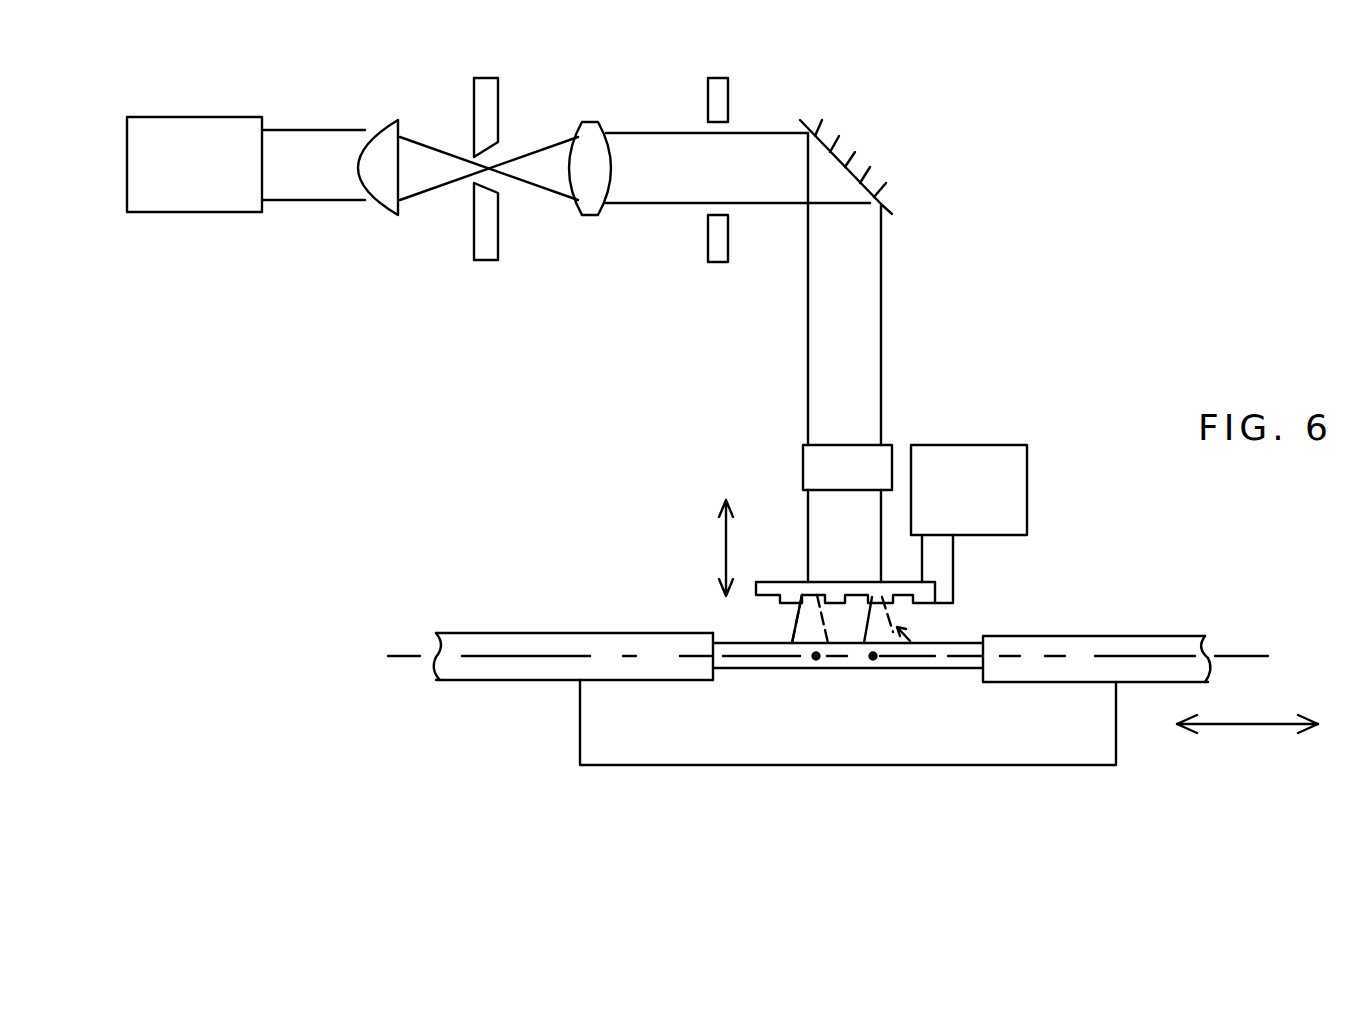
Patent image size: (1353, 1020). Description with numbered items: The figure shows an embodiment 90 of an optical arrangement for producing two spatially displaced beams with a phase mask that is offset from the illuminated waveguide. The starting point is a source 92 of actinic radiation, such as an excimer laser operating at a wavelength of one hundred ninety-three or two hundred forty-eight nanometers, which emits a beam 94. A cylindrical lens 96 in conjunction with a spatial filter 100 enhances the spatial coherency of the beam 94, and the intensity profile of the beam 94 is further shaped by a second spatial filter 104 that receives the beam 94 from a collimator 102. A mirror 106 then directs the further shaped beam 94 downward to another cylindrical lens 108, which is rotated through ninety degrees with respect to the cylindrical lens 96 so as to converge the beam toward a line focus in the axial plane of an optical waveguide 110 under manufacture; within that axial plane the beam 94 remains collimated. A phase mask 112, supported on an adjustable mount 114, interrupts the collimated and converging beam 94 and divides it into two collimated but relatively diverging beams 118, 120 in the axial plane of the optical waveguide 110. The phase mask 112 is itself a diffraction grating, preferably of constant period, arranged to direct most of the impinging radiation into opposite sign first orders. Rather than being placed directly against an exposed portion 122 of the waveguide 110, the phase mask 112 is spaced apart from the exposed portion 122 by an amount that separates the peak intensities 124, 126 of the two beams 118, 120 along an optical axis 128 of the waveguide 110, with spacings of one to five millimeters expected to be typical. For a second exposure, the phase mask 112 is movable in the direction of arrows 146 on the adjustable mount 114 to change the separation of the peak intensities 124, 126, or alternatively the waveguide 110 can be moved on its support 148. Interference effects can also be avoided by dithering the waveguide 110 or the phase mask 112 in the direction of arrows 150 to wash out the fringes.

The embodiment 90 is at (1142, 158).
The source of actinic radiation 92 is at (194, 164).
The beam 94 is at (310, 202).
The cylindrical lens 96 is at (392, 118).
The spatial filter 100 is at (498, 86).
The collimator 102 is at (590, 217).
The second spatial filter 104 is at (728, 90).
The mirror 106 is at (850, 205).
The cylindrical lens 108 is at (803, 468).
The optical waveguide 110 is at (1163, 613).
The phase mask 112 is at (806, 580).
The adjustable mount 114 is at (969, 524).
The beam 118 is at (795, 628).
The beam 120 is at (922, 627).
The exposed portion 122 is at (932, 645).
The peak intensity 124 is at (816, 660).
The peak intensity 126 is at (873, 660).
The optical axis 128 is at (532, 605).
The arrows 146 is at (722, 551).
The support 148 is at (577, 738).
The arrows 150 is at (1233, 725).